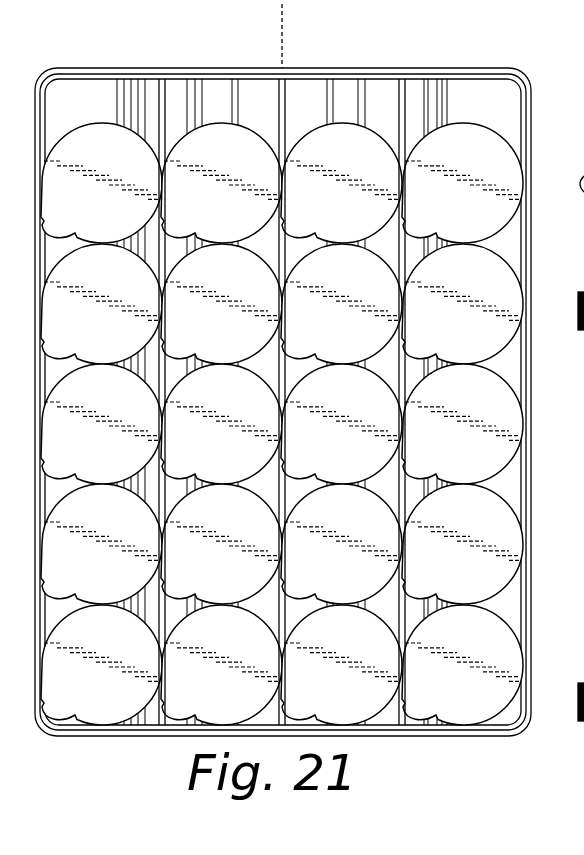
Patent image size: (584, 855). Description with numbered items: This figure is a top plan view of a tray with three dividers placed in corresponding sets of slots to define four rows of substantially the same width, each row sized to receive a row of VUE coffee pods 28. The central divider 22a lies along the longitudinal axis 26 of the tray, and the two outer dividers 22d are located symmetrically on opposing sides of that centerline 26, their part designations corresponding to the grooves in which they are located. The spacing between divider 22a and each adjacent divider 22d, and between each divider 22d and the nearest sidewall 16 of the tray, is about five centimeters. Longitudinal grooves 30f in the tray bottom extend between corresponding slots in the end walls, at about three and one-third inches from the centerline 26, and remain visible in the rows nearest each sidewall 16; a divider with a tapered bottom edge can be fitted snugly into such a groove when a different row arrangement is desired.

The sidewall 16 is at (530, 128).
The divider 22a is at (279, 92).
The divider 22d is at (165, 90).
The longitudinal axis 26 is at (284, 30).
The coffee pod 28 is at (497, 418).
The groove 30f is at (118, 92).